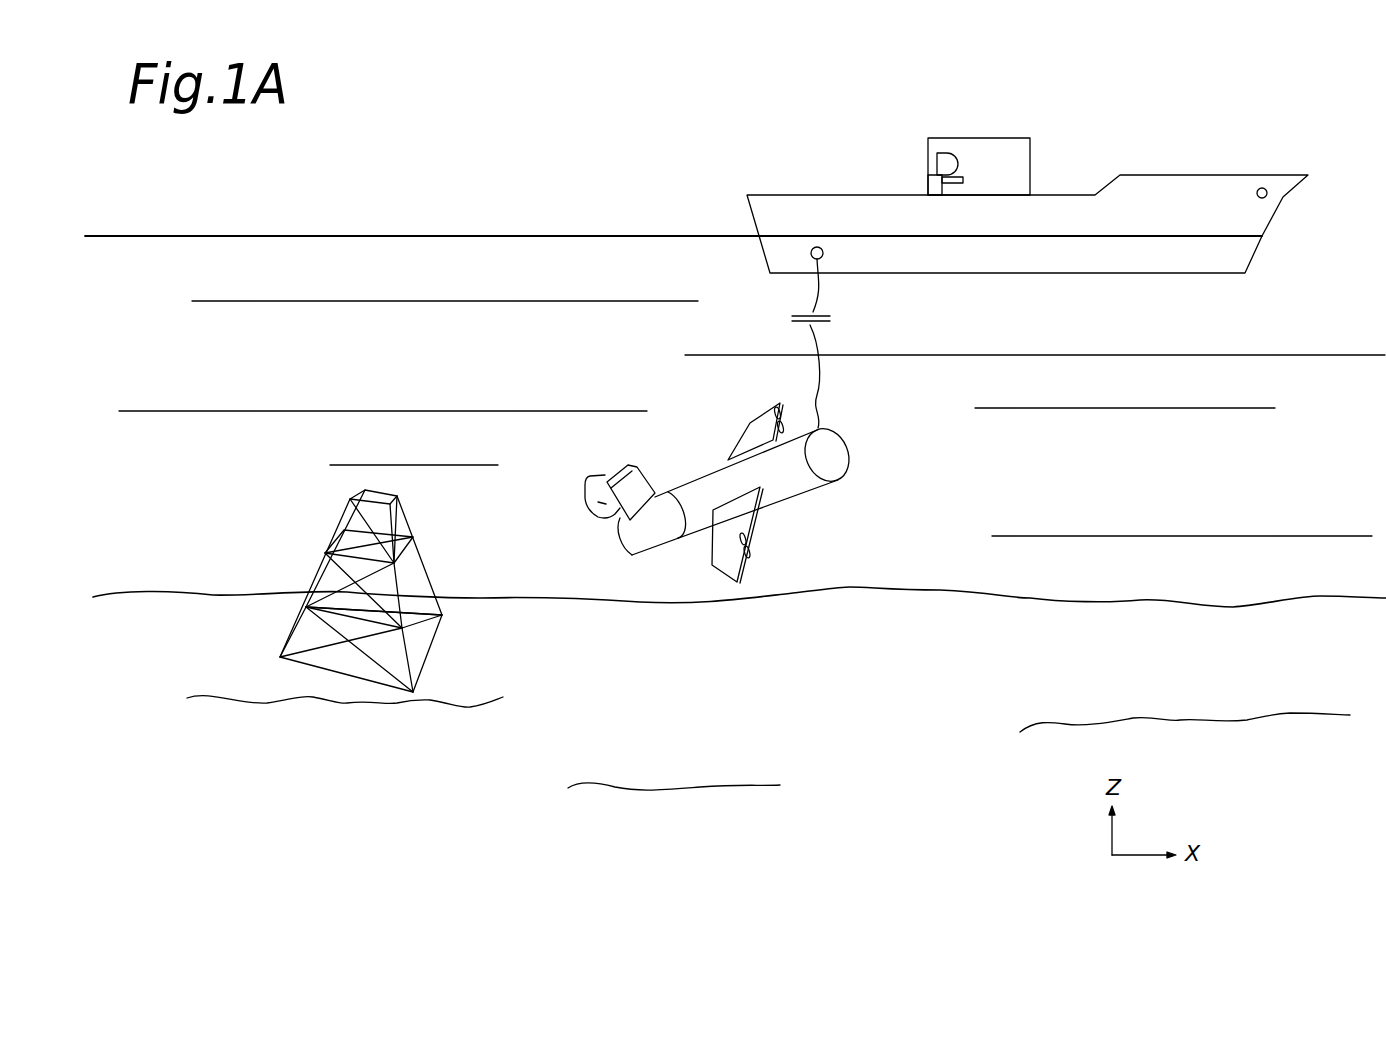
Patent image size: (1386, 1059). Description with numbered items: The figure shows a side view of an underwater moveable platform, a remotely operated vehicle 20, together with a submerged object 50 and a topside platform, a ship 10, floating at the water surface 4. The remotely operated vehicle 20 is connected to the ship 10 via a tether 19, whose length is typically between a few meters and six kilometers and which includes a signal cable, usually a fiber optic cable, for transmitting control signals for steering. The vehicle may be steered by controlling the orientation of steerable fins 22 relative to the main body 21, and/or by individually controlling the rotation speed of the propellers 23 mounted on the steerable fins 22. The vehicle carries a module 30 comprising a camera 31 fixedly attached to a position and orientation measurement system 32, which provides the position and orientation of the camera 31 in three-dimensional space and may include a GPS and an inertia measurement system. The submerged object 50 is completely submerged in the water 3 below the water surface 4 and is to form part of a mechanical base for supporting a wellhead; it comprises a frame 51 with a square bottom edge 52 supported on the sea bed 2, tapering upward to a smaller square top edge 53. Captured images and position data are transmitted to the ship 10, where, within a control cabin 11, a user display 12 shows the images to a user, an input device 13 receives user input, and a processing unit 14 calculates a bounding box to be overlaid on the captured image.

The sea bed 2 is at (727, 725).
The water 3 is at (326, 344).
The water surface 4 is at (470, 235).
The ship 10 is at (1027, 171).
The control cabin 11 is at (1008, 144).
The user display 12 is at (958, 153).
The input device 13 is at (965, 181).
The processing unit 14 is at (928, 186).
The tether 19 is at (821, 382).
The remotely operated vehicle 20 is at (764, 504).
The main body 21 is at (830, 466).
The steerable fins 22 is at (750, 437).
The propellers 23 is at (781, 428).
The module 30 is at (634, 495).
The camera 31 is at (603, 506).
The position and orientation measurement system 32 is at (650, 477).
The submerged object 50 is at (363, 594).
The frame 51 is at (424, 560).
The bottom edge 52 is at (340, 673).
The top edge 53 is at (366, 489).